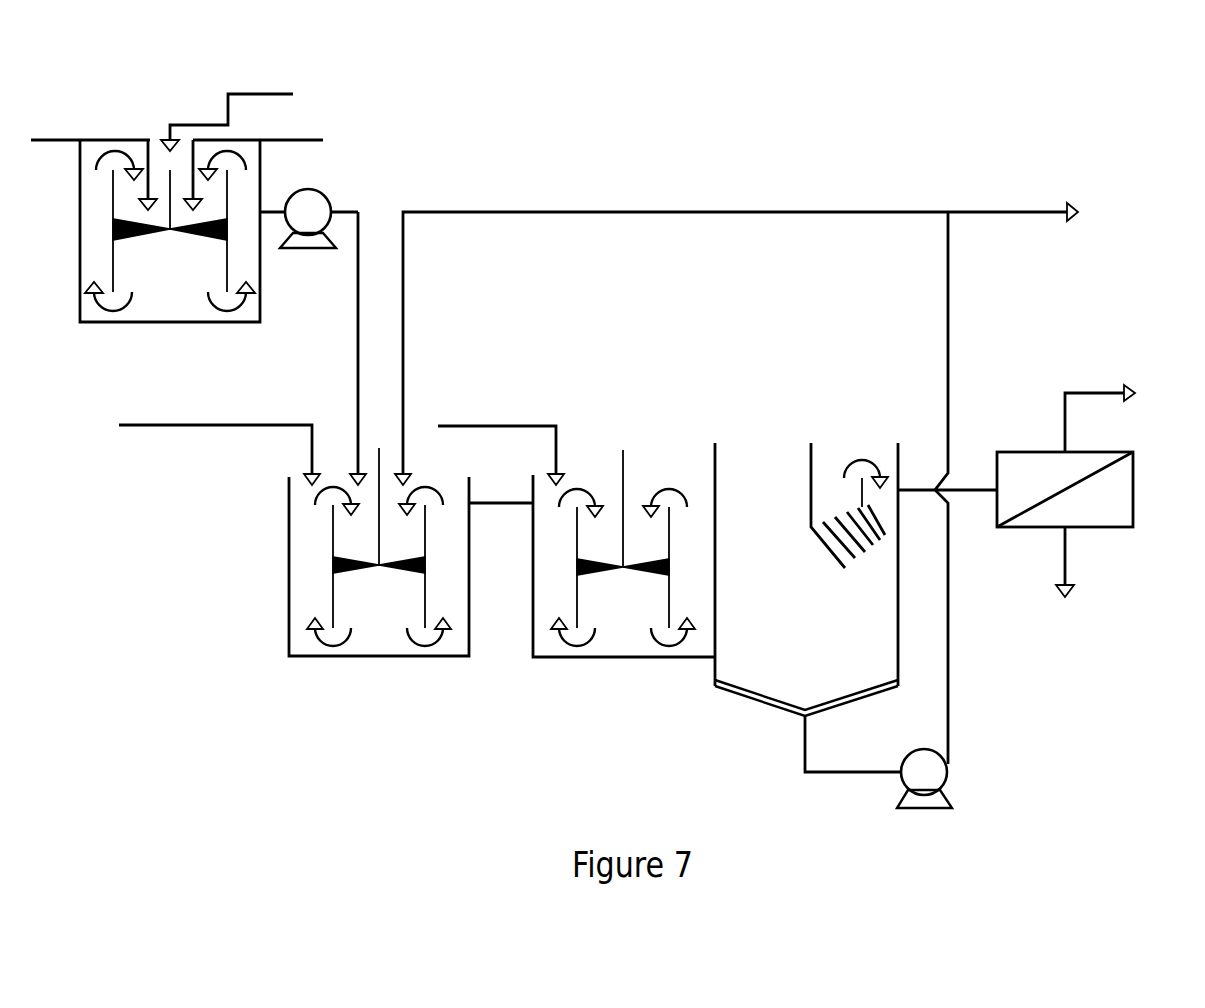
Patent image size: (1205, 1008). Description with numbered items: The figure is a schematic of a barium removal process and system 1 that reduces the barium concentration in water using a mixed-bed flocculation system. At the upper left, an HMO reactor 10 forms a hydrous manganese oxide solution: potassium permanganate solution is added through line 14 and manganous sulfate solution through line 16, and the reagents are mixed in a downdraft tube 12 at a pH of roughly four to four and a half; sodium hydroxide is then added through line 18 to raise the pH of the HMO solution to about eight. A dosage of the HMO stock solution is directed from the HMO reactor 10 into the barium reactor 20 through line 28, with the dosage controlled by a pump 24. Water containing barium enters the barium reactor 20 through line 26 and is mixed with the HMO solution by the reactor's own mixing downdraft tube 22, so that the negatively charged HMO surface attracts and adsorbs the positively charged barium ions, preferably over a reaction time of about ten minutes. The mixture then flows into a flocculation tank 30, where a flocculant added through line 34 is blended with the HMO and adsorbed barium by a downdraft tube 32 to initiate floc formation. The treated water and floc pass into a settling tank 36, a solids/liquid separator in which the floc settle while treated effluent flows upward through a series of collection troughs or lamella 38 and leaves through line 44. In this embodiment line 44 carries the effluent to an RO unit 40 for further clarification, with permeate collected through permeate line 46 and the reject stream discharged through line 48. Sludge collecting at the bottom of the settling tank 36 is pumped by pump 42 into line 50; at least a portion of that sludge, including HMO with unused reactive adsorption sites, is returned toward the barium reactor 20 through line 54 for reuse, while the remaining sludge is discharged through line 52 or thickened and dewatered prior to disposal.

The barium removal process and system 1 is at (917, 122).
The HMO reactor 10 is at (80, 270).
The downdraft tube 12 is at (128, 212).
The line 14 is at (47, 140).
The line 16 is at (293, 140).
The line 18 is at (258, 94).
The barium reactor 20 is at (289, 618).
The barium reactor mixer 22 is at (357, 545).
The pump 24 is at (330, 200).
The line 26 is at (172, 425).
The line 28 is at (357, 362).
The flocculation tank 30 is at (533, 575).
The downdraft tube 32 is at (605, 545).
The line 34 is at (505, 426).
The settling tank 36 is at (898, 598).
The collection troughs or lamella 38 is at (832, 552).
The RO unit 40 is at (1133, 483).
The pump 42 is at (913, 752).
The line 44 is at (927, 488).
The permeate line 46 is at (1095, 392).
The line 48 is at (1065, 562).
The line 50 is at (950, 295).
The line 52 is at (998, 211).
The line 54 is at (717, 210).